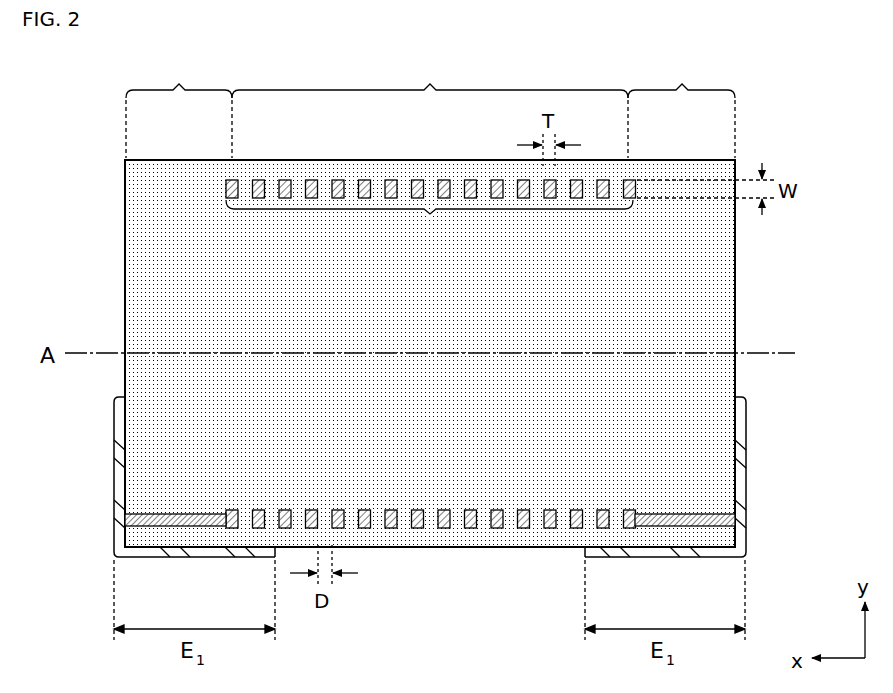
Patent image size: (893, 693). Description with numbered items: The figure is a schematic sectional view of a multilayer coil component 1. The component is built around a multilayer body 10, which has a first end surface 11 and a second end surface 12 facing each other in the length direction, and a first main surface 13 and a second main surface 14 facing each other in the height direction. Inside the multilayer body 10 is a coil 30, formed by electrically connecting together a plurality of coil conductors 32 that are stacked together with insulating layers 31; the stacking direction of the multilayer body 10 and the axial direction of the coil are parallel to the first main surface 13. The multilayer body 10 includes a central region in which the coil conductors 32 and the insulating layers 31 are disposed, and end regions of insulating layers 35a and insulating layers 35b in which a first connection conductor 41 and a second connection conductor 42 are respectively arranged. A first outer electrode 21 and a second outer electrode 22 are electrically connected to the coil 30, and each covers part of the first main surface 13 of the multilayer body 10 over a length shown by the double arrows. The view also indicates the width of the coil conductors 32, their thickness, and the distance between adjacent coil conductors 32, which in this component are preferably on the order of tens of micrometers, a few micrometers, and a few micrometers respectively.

The multilayer coil component 1 is at (88, 130).
The multilayer body 10 is at (438, 334).
The first end surface 11 is at (125, 320).
The second end surface 12 is at (737, 320).
The first main surface 13 is at (403, 548).
The second main surface 14 is at (212, 160).
The first outer electrode 21 is at (121, 467).
The second outer electrode 22 is at (742, 448).
The coil 30 is at (476, 538).
The insulating layers 31 is at (430, 107).
The coil conductors 32 is at (431, 212).
The insulating layers 35a is at (179, 107).
The insulating layers 35b is at (681, 107).
The first connection conductor 41 is at (187, 524).
The second connection conductor 42 is at (680, 526).